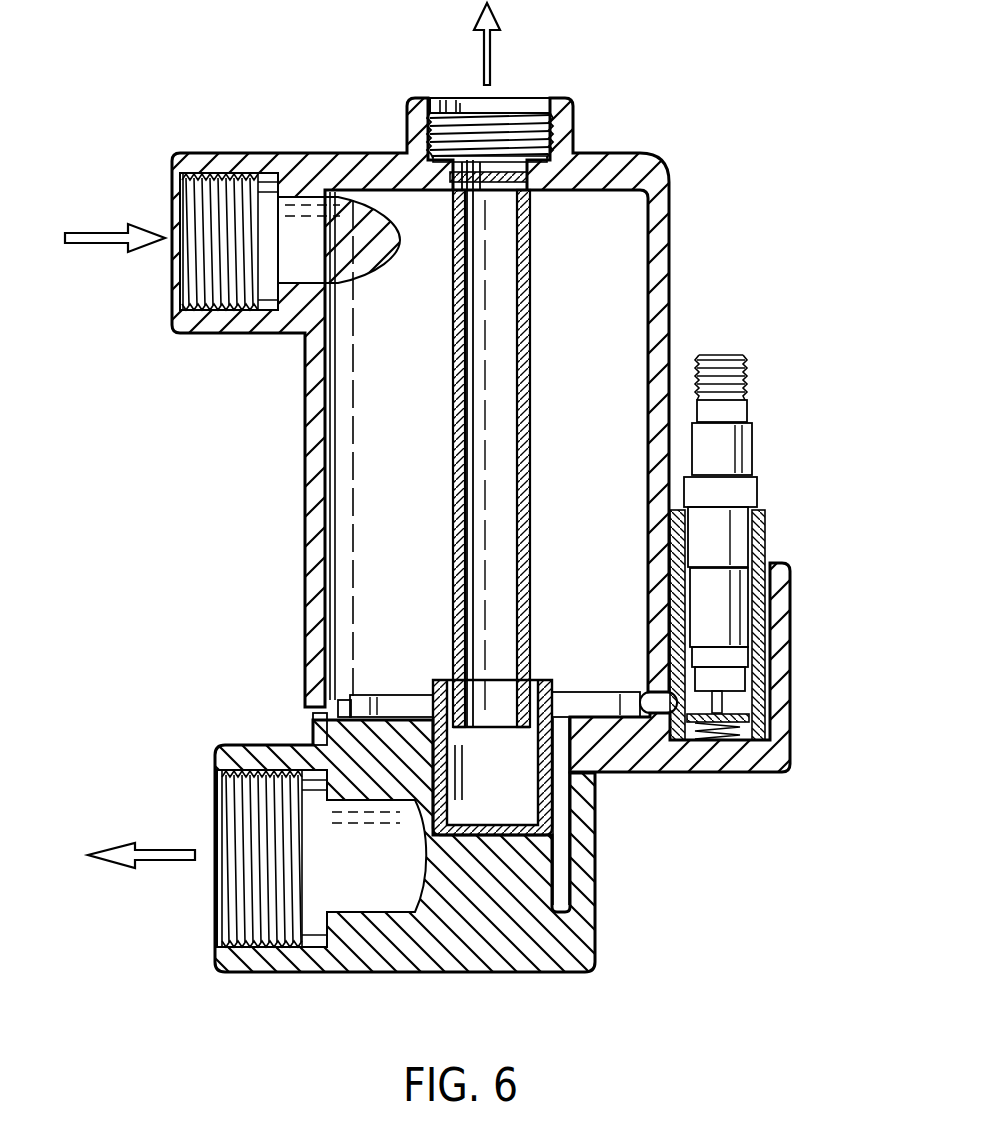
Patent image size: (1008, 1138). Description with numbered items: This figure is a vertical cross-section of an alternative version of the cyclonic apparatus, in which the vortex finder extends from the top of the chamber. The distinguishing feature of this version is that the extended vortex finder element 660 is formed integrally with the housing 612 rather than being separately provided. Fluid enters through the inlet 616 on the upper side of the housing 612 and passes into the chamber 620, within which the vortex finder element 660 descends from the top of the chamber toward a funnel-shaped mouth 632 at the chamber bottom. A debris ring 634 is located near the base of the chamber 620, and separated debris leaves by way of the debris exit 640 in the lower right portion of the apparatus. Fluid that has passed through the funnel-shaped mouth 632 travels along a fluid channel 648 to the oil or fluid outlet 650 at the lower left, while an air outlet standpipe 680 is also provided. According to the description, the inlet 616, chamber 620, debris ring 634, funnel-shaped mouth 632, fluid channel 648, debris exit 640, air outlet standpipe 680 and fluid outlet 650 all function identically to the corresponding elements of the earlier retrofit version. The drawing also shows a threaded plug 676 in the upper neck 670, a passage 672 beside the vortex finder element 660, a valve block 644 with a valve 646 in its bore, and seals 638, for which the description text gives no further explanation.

The housing 612 is at (672, 260).
The inlet 616 is at (170, 297).
The chamber 620 is at (613, 220).
The funnel-shaped mouth 632 is at (588, 742).
The debris ring 634 is at (312, 715).
The O-ring seal 638 is at (340, 707).
The debris exit 640 is at (668, 712).
The valve block 644 is at (757, 710).
The check valve 646 is at (757, 478).
The fluid channel 648 is at (575, 845).
The oil or fluid outlet 650 is at (214, 909).
The extended vortex finder element 660 is at (531, 393).
The outlet neck 670 is at (442, 98).
The passage 672 is at (503, 187).
The threaded plug 676 is at (512, 150).
The air outlet standpipe 680 is at (560, 793).